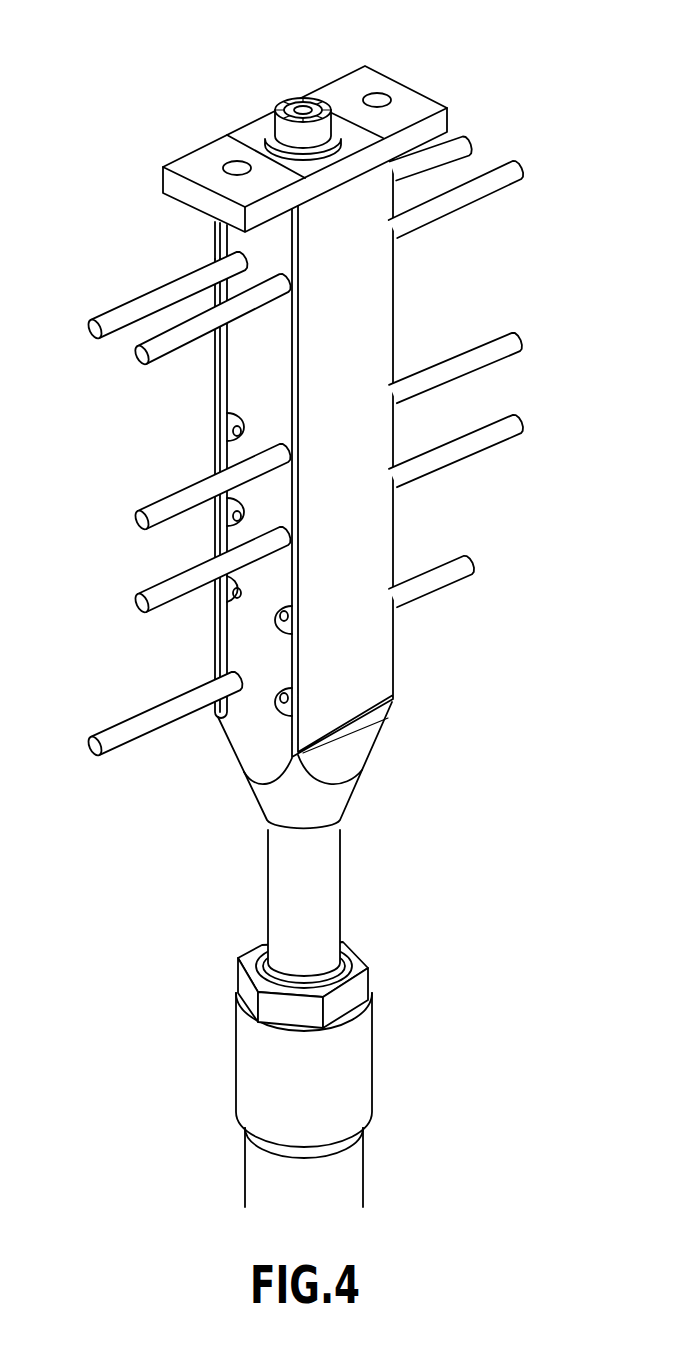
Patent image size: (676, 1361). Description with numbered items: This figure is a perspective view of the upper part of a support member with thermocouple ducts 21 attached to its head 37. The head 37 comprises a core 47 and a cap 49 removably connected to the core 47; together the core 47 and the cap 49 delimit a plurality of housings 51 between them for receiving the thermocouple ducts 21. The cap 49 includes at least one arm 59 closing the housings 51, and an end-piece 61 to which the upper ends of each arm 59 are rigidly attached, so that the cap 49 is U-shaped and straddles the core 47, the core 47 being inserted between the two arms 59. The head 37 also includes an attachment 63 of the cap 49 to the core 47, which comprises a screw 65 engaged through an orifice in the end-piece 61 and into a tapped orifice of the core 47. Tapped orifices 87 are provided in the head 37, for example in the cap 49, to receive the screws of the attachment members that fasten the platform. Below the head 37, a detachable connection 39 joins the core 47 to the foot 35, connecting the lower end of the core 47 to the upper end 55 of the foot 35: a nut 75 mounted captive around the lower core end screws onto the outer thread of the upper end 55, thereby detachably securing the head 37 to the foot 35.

The thermocouple duct 21 is at (447, 207).
The foot 35 is at (336, 1182).
The head 37 is at (309, 494).
The detachable connection 39 is at (324, 1044).
The core 47 is at (246, 639).
The cap 49 is at (185, 248).
The housings 51 is at (290, 682).
The upper end 55 is at (258, 1180).
The arm 59 is at (380, 310).
The end-piece 61 is at (442, 121).
The attachment 63 is at (339, 122).
The screw 65 is at (344, 120).
The nut 75 is at (243, 1072).
The tapped orifices 87 is at (377, 100).